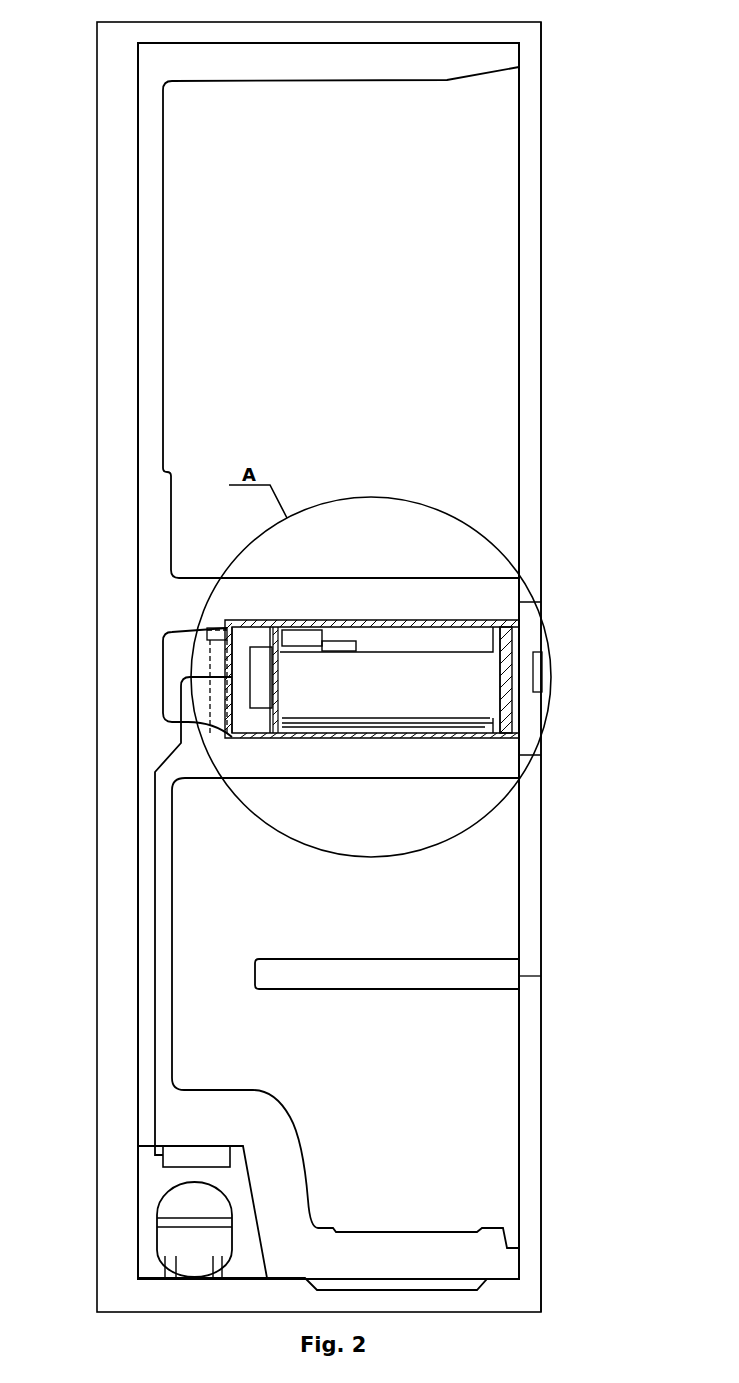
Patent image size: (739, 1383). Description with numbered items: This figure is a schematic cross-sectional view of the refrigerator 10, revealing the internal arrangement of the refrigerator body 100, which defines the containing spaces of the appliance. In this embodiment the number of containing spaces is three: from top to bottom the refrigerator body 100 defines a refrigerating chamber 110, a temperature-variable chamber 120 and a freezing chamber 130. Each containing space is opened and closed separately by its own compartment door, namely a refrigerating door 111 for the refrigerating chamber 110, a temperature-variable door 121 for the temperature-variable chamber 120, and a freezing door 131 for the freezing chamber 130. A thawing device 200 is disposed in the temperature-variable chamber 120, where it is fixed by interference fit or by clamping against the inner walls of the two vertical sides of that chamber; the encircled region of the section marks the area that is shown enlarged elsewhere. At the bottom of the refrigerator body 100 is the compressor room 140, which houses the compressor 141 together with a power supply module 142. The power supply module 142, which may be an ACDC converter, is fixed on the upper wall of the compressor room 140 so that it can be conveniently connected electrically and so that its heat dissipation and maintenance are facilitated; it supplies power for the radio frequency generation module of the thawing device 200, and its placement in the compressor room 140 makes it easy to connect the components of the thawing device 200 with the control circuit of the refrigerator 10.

The refrigerator 10 is at (75, 23).
The refrigerator body 100 is at (157, 558).
The refrigerating chamber 110 is at (488, 387).
The refrigerating door 111 is at (528, 216).
The temperature-variable chamber 120 is at (513, 650).
The temperature-variable door 121 is at (527, 723).
The thawing device 200 is at (478, 706).
The freezing chamber 130 is at (480, 1163).
The freezing door 131 is at (528, 930).
The compressor room 140 is at (153, 1198).
The compressor 141 is at (188, 1238).
The power supply module 142 is at (187, 1155).